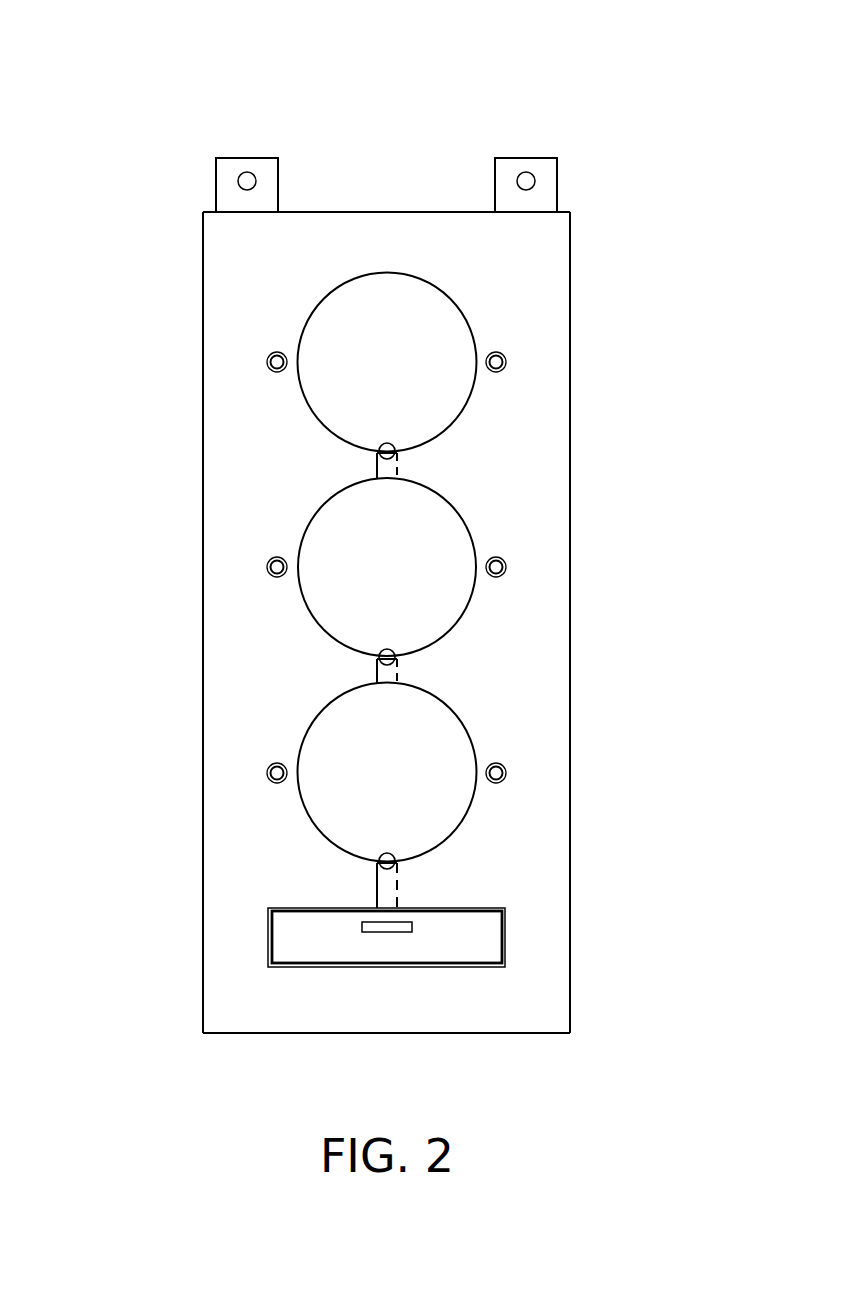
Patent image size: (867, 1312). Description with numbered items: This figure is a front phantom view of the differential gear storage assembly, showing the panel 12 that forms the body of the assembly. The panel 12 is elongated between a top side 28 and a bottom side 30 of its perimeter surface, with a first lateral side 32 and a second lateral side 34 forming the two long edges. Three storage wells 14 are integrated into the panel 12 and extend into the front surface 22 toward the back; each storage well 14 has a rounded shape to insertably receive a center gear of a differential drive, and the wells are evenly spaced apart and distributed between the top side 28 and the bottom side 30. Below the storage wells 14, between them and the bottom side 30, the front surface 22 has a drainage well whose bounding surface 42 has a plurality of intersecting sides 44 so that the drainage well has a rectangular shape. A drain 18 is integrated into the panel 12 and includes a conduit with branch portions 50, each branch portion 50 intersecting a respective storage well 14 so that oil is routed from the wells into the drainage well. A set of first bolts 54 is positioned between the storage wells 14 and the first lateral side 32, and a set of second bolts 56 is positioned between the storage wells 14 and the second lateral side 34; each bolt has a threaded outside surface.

The panel 12 is at (597, 191).
The storage wells 14 is at (393, 347).
The drain 18 is at (420, 669).
The front surface 22 is at (264, 992).
The top side 28 is at (425, 212).
The bottom side 30 is at (497, 1033).
The first lateral side 32 is at (203, 799).
The second lateral side 34 is at (570, 514).
The bounding surface 42 is at (427, 967).
The intersecting sides 44 is at (272, 948).
The branch portions 50 is at (378, 467).
The first bolts 54 is at (277, 343).
The second bolts 56 is at (497, 343).